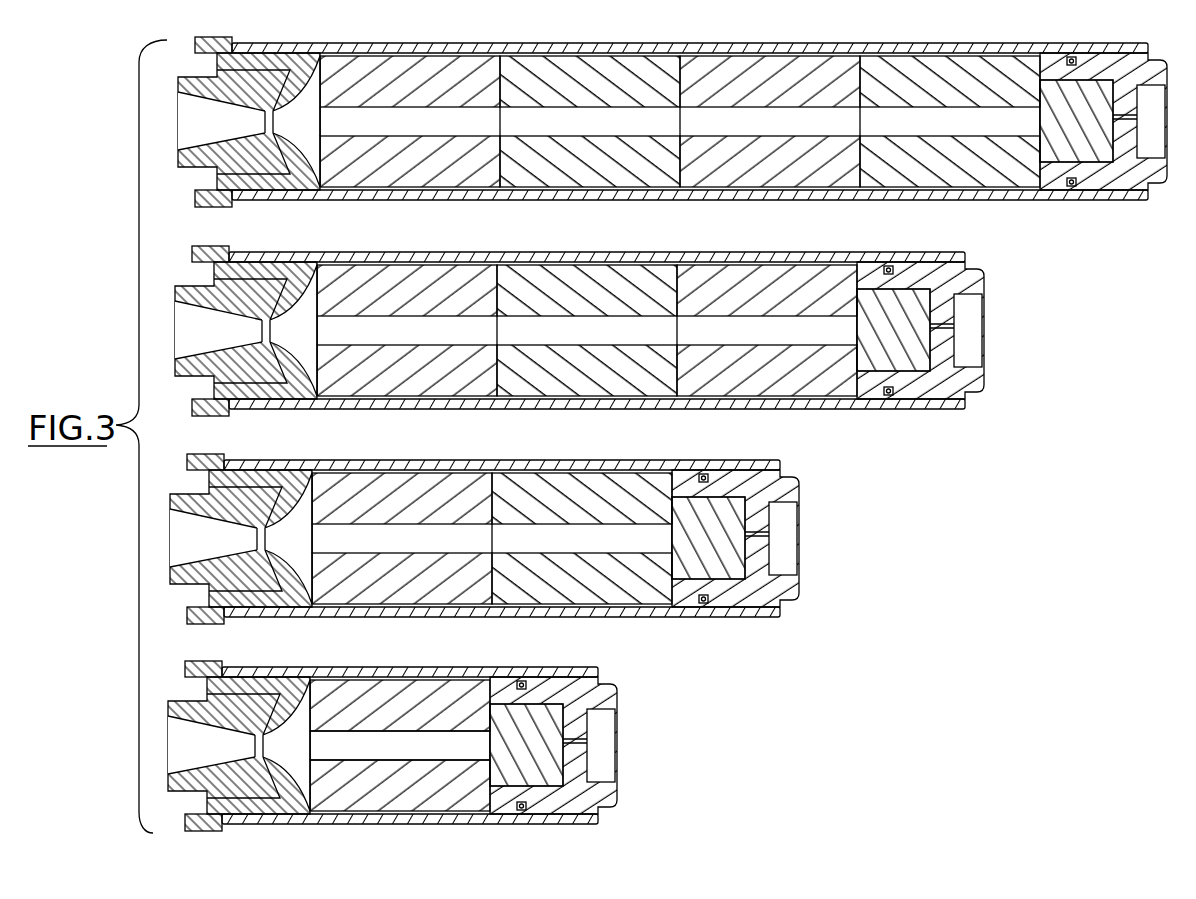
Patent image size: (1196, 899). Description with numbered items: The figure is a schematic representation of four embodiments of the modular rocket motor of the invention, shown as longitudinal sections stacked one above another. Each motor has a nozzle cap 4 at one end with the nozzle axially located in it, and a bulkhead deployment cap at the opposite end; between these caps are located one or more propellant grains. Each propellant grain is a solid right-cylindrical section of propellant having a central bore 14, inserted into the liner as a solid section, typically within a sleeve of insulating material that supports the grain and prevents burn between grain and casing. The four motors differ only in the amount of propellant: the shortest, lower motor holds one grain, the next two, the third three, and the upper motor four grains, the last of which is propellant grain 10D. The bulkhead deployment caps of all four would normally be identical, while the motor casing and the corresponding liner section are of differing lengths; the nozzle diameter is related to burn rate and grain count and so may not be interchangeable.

The nozzle cap 4 is at (392, 769).
The propellant grain 10D is at (925, 173).
The central bore 14 is at (400, 764).